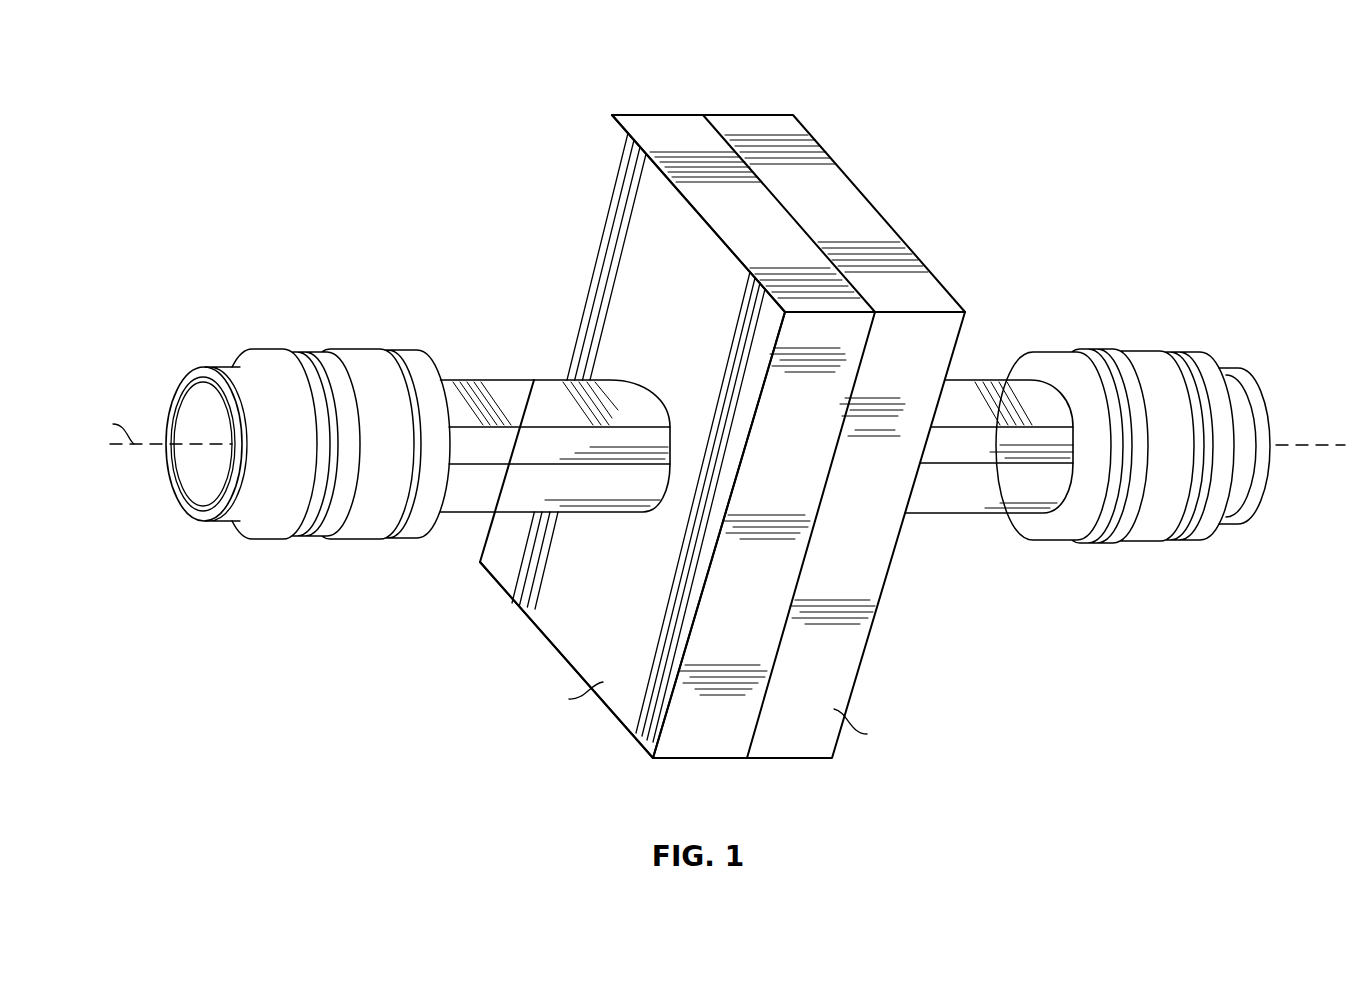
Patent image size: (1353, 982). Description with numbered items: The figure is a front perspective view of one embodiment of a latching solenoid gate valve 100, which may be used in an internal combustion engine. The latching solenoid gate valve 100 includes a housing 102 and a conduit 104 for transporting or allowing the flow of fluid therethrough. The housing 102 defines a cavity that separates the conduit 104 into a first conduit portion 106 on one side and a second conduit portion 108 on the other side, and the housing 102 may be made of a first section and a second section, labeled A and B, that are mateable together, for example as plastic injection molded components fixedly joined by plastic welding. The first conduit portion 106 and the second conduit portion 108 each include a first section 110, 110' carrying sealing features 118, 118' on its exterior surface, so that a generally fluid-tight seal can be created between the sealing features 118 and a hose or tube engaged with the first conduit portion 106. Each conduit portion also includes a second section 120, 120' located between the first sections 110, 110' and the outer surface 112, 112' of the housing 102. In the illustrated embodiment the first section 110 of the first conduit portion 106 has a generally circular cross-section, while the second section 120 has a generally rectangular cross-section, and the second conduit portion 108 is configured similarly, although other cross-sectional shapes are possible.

The latching solenoid gate valve 100 is at (707, 425).
The housing 102 is at (727, 436).
The conduit 104 is at (551, 427).
The first conduit portion 106 is at (306, 461).
The second conduit portion 108 is at (1140, 443).
The first section 110 is at (288, 506).
The first section 110' is at (1155, 527).
The outer surface 112 is at (632, 436).
The outer surface 112' is at (793, 436).
The sealing features 118 is at (341, 407).
The sealing features 118' is at (1115, 372).
The second section 120 is at (528, 351).
The second section 120' is at (989, 370).